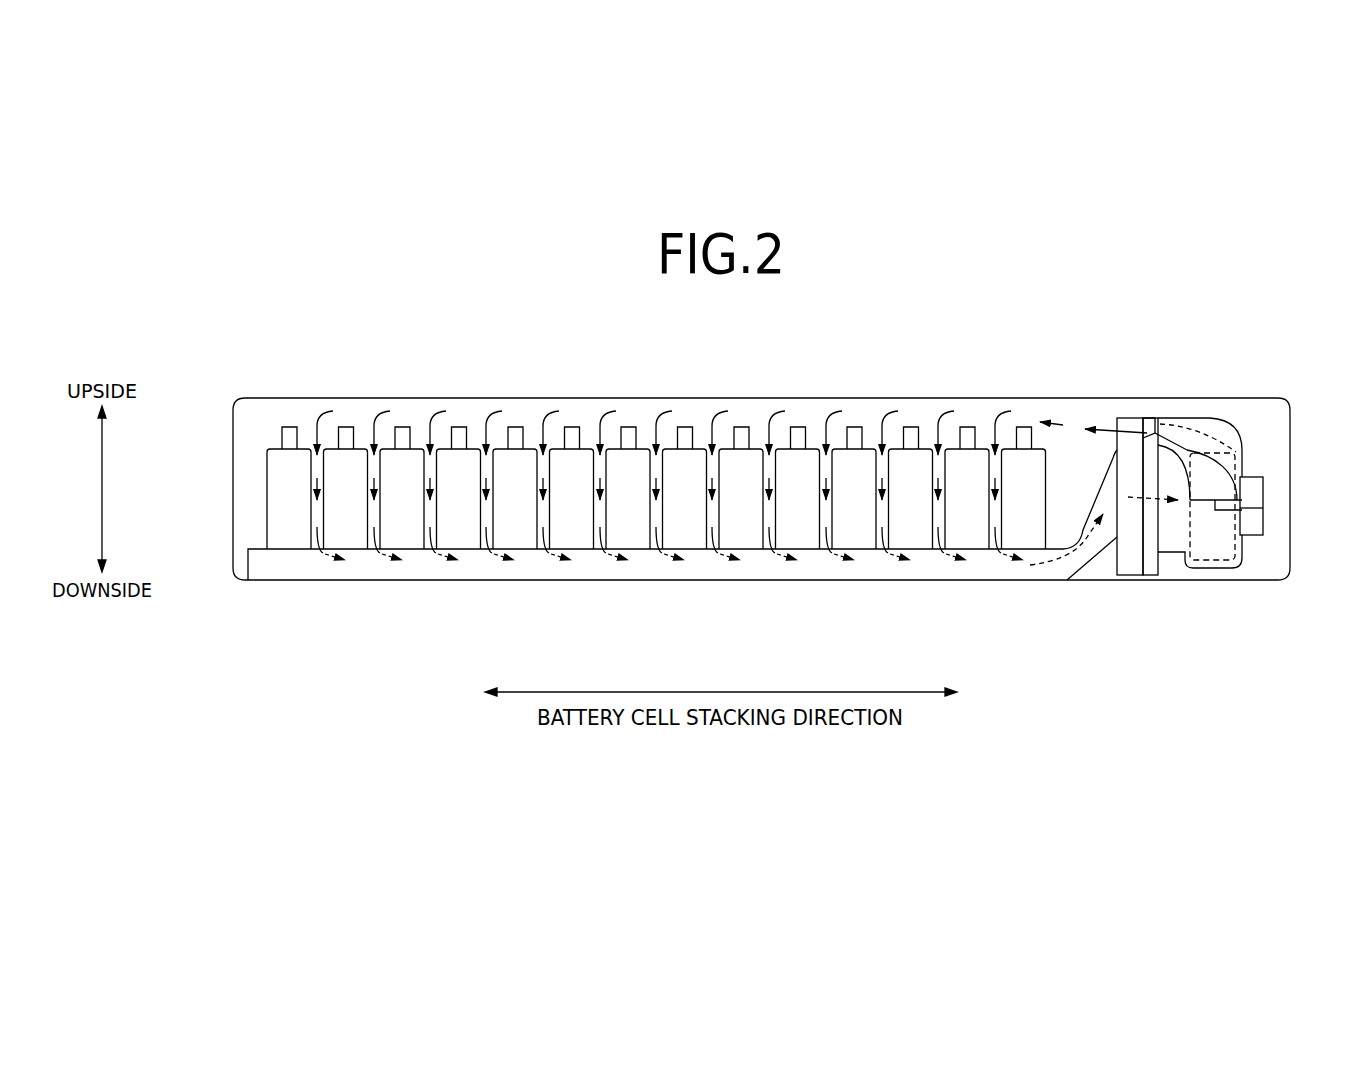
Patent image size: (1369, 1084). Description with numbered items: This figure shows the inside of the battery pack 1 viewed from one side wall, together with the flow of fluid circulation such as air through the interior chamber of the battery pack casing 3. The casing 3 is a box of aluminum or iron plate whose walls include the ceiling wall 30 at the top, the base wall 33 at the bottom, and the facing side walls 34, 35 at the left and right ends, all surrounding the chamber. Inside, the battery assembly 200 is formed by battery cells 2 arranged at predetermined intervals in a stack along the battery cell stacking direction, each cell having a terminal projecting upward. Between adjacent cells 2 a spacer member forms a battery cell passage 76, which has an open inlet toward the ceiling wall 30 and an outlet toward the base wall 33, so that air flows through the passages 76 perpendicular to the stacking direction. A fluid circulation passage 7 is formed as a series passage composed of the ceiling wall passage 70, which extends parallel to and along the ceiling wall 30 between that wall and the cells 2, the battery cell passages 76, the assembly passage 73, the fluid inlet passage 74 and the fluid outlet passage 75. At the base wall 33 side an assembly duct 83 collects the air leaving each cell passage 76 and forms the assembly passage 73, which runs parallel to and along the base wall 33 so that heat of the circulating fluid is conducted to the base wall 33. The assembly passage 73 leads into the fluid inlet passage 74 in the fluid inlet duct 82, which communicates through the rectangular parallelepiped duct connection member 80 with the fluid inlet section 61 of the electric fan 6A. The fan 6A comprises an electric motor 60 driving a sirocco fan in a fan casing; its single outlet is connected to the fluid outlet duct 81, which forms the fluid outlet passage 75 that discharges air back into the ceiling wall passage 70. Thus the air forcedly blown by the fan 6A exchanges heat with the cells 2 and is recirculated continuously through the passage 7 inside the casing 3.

The battery pack 1 is at (755, 473).
The battery cell 2 is at (268, 447).
The battery pack casing 3 is at (755, 484).
The fluid circulation passage 7 is at (1050, 424).
The ceiling wall 30 is at (873, 398).
The base wall 33 is at (830, 581).
The side wall 34 is at (1292, 438).
The side wall 35 is at (233, 428).
The electric motor 60 is at (1252, 477).
The fluid inlet section 61 is at (1180, 570).
The electric fan 6A is at (1226, 572).
The ceiling wall passage 70 is at (655, 408).
The assembly passage 73 is at (720, 570).
The fluid inlet passage 74 is at (1099, 540).
The fluid outlet passage 75 is at (1190, 425).
The battery cell passage 76 is at (543, 549).
The duct connection member 80 is at (1130, 579).
The fluid outlet duct 81 is at (1170, 418).
The fluid inlet duct 82 is at (1085, 570).
The assembly duct 83 is at (248, 560).
The battery assembly 200 is at (582, 444).